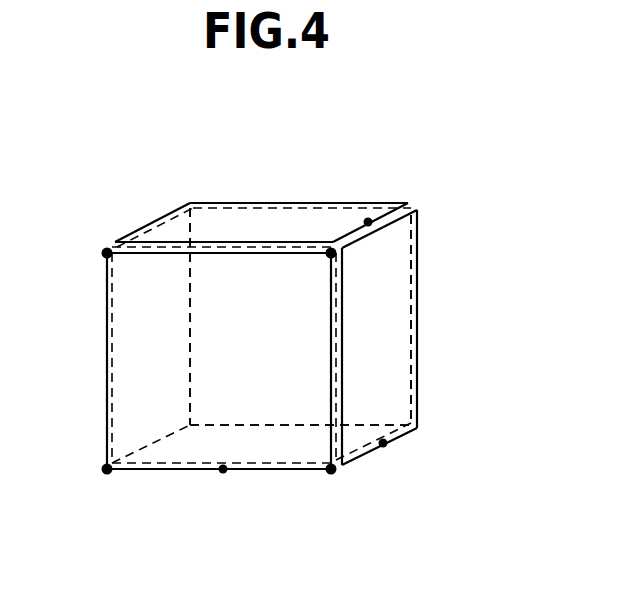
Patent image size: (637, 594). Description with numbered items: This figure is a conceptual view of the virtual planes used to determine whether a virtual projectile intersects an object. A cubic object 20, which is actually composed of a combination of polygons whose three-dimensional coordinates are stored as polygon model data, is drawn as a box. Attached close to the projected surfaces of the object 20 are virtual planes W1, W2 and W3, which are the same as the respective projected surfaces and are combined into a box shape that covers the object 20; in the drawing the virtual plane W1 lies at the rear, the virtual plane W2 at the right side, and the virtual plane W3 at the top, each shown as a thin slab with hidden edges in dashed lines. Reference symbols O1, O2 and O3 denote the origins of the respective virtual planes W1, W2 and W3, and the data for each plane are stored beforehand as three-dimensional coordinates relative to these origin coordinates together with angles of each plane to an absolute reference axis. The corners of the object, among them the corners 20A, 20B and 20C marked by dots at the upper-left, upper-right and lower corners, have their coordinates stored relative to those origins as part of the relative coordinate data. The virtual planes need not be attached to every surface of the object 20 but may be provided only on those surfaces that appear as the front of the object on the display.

The cubic object 20 is at (170, 220).
The corner of the object 20A is at (105, 250).
The corner of the object 20B is at (336, 253).
The corner of the object 20C is at (108, 474).
The virtual plane W1 is at (265, 438).
The virtual plane W2 is at (376, 337).
The virtual plane W3 is at (261, 225).
The origin of virtual plane W1 O1 is at (222, 473).
The origin of virtual plane W2 O2 is at (384, 447).
The origin of virtual plane W3 O3 is at (368, 219).